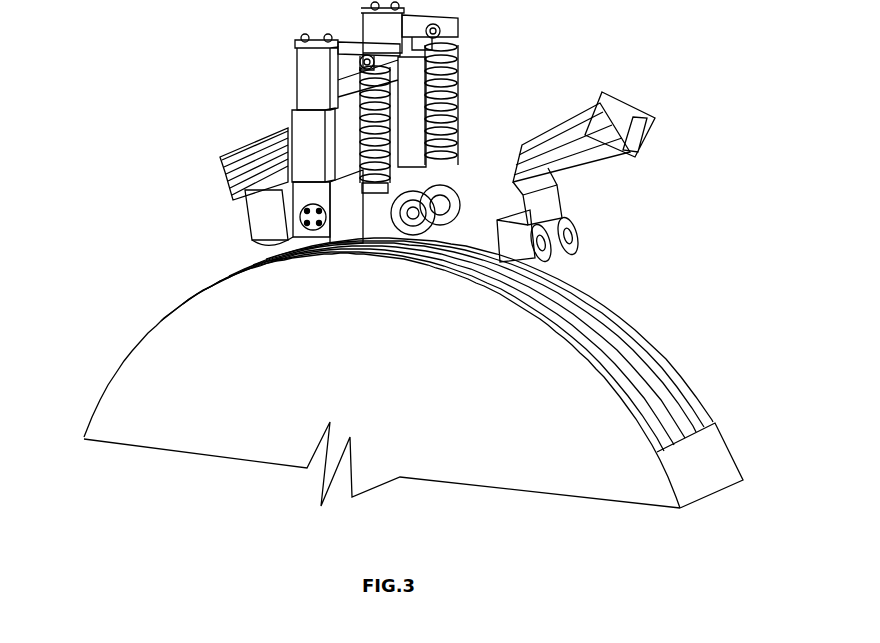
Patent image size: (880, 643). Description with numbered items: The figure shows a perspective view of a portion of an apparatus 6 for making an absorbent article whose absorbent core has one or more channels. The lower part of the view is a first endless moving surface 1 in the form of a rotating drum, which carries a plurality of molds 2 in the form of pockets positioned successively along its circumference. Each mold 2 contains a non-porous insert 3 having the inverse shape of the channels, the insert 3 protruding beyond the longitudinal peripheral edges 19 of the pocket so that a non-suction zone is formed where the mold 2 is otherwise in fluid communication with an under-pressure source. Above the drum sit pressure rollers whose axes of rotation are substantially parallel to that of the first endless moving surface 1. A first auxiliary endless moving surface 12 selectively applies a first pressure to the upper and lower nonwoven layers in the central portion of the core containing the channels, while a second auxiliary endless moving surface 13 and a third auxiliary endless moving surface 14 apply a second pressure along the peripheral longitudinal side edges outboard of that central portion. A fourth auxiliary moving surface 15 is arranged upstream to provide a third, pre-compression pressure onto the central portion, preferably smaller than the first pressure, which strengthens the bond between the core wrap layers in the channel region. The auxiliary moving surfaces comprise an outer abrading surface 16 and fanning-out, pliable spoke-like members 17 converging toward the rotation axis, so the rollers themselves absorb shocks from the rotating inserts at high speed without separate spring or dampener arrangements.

The first endless moving surface 1 is at (190, 425).
The mold 2 is at (663, 340).
The non-porous insert 3 is at (670, 372).
The apparatus 6 is at (112, 267).
The first auxiliary endless moving surface 12 is at (458, 182).
The second auxiliary endless moving surface 13 is at (580, 244).
The third auxiliary endless moving surface 14 is at (545, 265).
The fourth auxiliary moving surface 15 is at (255, 242).
The outer abrading surface 16 is at (462, 222).
The spoke-like members 17 is at (406, 245).
The longitudinal peripheral edges 19 is at (704, 397).